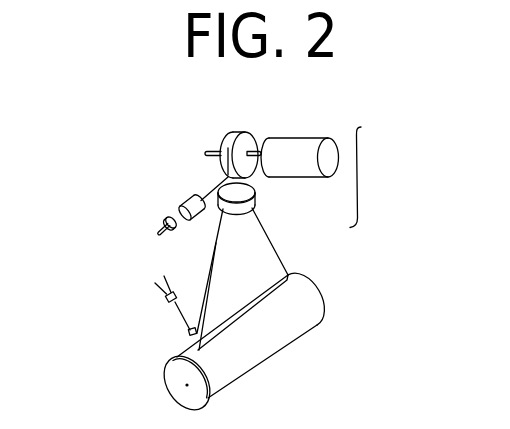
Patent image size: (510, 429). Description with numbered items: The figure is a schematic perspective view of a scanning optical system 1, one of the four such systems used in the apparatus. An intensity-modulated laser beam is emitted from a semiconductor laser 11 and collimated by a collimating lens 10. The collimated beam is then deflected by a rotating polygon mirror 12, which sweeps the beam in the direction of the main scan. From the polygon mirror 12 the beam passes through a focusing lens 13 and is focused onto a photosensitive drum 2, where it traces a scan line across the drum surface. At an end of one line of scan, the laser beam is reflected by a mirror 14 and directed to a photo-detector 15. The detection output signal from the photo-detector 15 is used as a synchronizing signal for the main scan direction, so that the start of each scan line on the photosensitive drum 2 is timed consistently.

The scanning optical system 1 is at (360, 176).
The photosensitive drum 2 is at (320, 293).
The collimating lens 10 is at (188, 199).
The semiconductor laser 11 is at (165, 219).
The rotating polygon mirror 12 is at (234, 133).
The focusing lens 13 is at (256, 203).
The mirror 14 is at (187, 333).
The photo-detector 15 is at (165, 298).